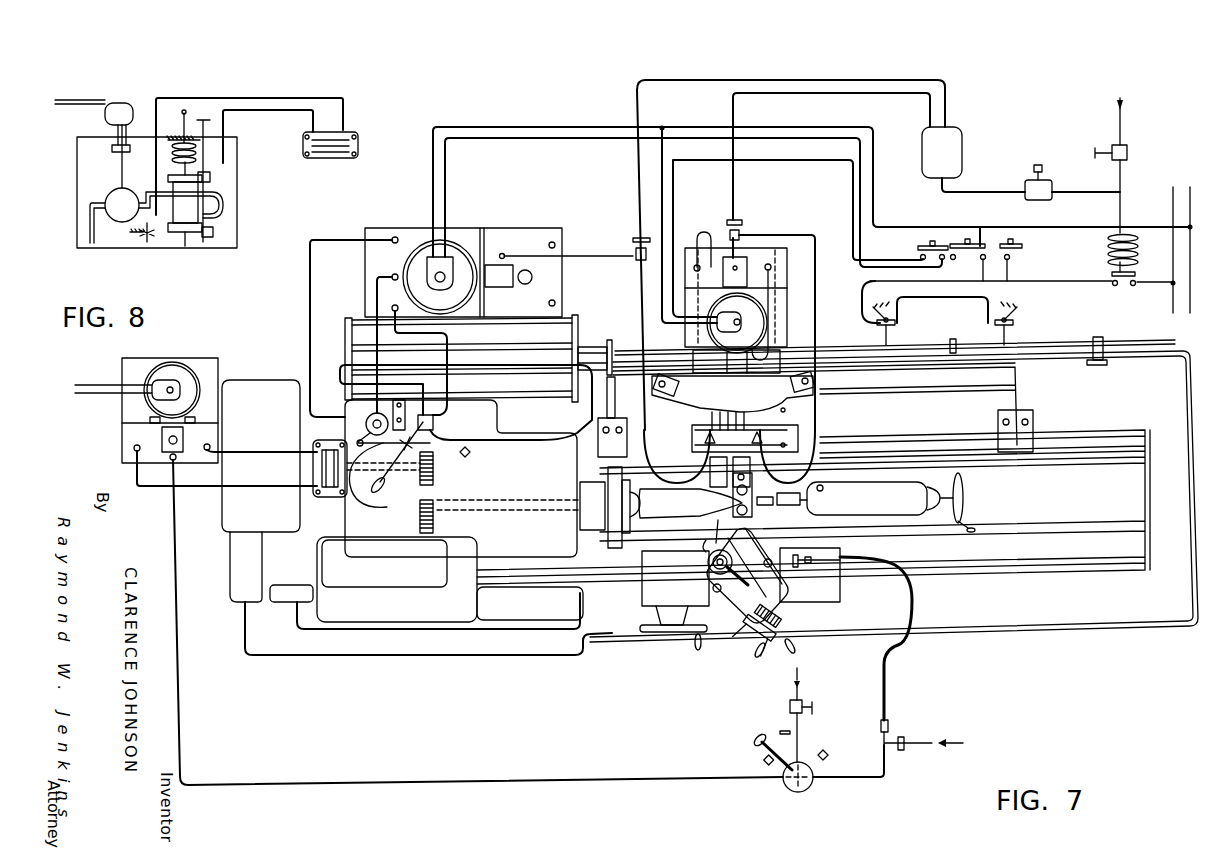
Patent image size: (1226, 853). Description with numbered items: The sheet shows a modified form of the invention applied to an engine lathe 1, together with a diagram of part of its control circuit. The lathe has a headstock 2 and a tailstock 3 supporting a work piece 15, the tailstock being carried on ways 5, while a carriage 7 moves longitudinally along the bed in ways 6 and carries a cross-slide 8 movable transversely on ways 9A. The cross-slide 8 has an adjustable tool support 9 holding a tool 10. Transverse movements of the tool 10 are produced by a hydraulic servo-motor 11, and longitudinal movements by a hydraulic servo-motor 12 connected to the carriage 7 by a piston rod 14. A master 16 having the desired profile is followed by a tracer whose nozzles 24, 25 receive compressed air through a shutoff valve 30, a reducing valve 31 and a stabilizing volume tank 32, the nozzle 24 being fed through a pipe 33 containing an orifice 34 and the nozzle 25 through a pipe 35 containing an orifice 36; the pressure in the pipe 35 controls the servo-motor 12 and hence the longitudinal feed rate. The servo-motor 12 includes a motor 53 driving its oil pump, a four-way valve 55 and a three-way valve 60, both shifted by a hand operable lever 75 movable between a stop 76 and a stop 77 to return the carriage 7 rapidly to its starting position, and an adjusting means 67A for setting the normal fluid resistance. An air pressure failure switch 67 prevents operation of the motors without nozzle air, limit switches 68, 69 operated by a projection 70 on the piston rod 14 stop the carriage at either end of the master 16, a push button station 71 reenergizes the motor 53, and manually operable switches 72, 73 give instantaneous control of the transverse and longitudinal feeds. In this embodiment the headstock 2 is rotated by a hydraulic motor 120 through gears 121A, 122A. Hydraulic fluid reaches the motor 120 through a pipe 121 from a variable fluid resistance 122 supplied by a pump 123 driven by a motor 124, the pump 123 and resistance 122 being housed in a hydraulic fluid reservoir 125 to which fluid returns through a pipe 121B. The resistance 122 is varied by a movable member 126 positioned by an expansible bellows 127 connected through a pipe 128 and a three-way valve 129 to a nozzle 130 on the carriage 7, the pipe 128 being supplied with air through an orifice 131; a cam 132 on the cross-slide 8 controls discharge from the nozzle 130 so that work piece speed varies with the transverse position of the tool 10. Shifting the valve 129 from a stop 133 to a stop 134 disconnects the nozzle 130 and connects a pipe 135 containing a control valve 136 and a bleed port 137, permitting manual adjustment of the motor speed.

In FIG. 7, the engine lathe 1 is at (230, 553).
In FIG. 7, the headstock 2 is at (613, 547).
In FIG. 7, the tailstock 3 is at (782, 506).
In FIG. 7, the ways 5 is at (1017, 468).
In FIG. 7, the ways 6 is at (1142, 560).
In FIG. 7, the carriage 7 is at (642, 602).
In FIG. 7, the cross-slide 8 is at (712, 640).
In FIG. 7, the adjustable tool support 9 is at (710, 600).
In FIG. 7, the ways 9A is at (703, 458).
In FIG. 7, the tool 10 is at (703, 543).
In FIG. 7, the hydraulic servo-motor 11 is at (812, 305).
In FIG. 7, the hydraulic servo-motor 12 is at (590, 294).
In FIG. 7, the piston rod 14 is at (627, 350).
In FIG. 7, the work piece 15 is at (690, 503).
In FIG. 7, the master 16 is at (706, 418).
In FIG. 7, the nozzle 24 is at (783, 433).
In FIG. 7, the nozzle 25 is at (697, 430).
In FIG. 7, the shutoff valve 30 is at (1127, 152).
In FIG. 7, the reducing valve 31 is at (1045, 200).
In FIG. 7, the stabilizing volume tank 32 is at (963, 143).
In FIG. 7, the pipe 33 is at (735, 181).
In FIG. 7, the orifice 34 is at (740, 222).
In FIG. 7, the pipe 35 is at (633, 157).
In FIG. 7, the orifice 36 is at (633, 240).
In FIG. 7, the motor 53 is at (457, 242).
In FIG. 7, the 4-way valve 55 is at (433, 427).
In FIG. 7, the 3-way valve 60 is at (368, 420).
In FIG. 7, the air pressure failure switch 67 is at (1165, 273).
In FIG. 7, the adjusting means 67A is at (527, 284).
In FIG. 7, the limit switch 68 is at (893, 327).
In FIG. 7, the limit switch 69 is at (988, 327).
In FIG. 7, the projection 70 is at (953, 340).
In FIG. 7, the push button station 71 is at (1025, 245).
In FIG. 7, the manually operable switch 72 is at (980, 240).
In FIG. 7, the manually operable switch 73 is at (918, 246).
In FIG. 7, the hand operable lever 75 is at (378, 484).
In FIG. 7, the stop 76 is at (355, 493).
In FIG. 7, the stop 77 is at (470, 455).
In FIG. 8, the hydraulic motor 120 is at (358, 134).
In FIG. 7, the hydraulic motor 120 is at (316, 497).
In FIG. 8, the pipe 121 is at (345, 93).
In FIG. 7, the pipe 121 is at (233, 452).
In FIG. 7, the gear 121A is at (433, 478).
In FIG. 8, the pipe 121B is at (252, 112).
In FIG. 7, the pipe 121B is at (240, 487).
In FIG. 8, the variable fluid resistance 122 is at (173, 225).
In FIG. 7, the gear 122A is at (433, 527).
In FIG. 8, the pump 123 is at (108, 195).
In FIG. 8, the motor 124 is at (105, 112).
In FIG. 7, the motor 124 is at (178, 362).
In FIG. 8, the hydraulic fluid reservoir 125 is at (102, 250).
In FIG. 8, the movable member 126 is at (205, 167).
In FIG. 8, the expansible bellows 127 is at (163, 140).
In FIG. 8, the pipe 128 is at (185, 115).
In FIG. 7, the pipe 128 is at (183, 723).
In FIG. 7, the 3-way valve 129 is at (810, 787).
In FIG. 7, the nozzle 130 is at (800, 563).
In FIG. 7, the orifice 131 is at (902, 738).
In FIG. 7, the cam 132 is at (783, 600).
In FIG. 7, the stop 133 is at (767, 760).
In FIG. 7, the stop 134 is at (828, 755).
In FIG. 7, the pipe 135 is at (802, 735).
In FIG. 7, the control valve 136 is at (812, 703).
In FIG. 7, the bleed port 137 is at (780, 730).